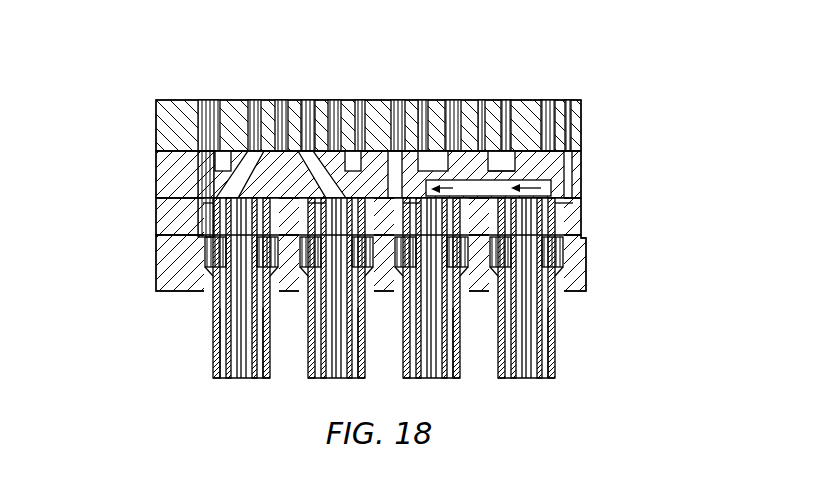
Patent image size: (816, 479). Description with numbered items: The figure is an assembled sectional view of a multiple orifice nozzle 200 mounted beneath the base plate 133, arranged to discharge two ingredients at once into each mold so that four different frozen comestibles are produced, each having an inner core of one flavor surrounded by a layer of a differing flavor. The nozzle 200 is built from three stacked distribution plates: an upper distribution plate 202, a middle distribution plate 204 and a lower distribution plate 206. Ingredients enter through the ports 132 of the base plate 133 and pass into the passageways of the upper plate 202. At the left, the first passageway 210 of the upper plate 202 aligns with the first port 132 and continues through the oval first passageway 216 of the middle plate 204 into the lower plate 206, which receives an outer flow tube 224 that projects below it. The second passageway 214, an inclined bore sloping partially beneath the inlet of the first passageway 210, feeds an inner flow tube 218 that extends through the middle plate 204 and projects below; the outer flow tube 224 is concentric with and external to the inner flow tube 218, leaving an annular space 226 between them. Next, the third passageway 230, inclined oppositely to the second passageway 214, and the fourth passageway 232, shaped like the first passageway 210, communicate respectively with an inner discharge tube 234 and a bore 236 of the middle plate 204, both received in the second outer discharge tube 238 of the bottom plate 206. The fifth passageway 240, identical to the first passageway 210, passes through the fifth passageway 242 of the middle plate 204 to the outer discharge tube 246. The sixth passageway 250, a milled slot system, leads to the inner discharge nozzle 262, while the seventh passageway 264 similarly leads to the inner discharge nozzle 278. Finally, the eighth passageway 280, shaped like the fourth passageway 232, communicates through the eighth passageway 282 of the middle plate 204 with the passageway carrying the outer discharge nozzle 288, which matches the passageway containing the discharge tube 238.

The multiple orifice nozzle 200 is at (125, 256).
The base plate 133 is at (157, 117).
The upper distribution plate 202 is at (155, 155).
The middle distribution plate 204 is at (152, 218).
The lower distribution plate 206 is at (157, 270).
The first passageway 210 is at (197, 174).
The first passageway of the middle plate 216 is at (201, 201).
The outer flow tube 224 is at (207, 338).
The inner flow tube 218 is at (220, 368).
The annular space 226 is at (253, 368).
The inner discharge tube 234 is at (317, 368).
The second outer discharge tube 238 is at (353, 368).
The inner discharge nozzle 278 is at (443, 370).
The outer discharge tube 246 is at (447, 368).
The inner discharge nozzle 262 is at (535, 370).
The outer discharge nozzle 288 is at (548, 347).
The port 132 is at (237, 102).
The second passageway 214 is at (258, 157).
The third passageway 230 is at (297, 153).
The fourth passageway 232 is at (359, 160).
The fifth passageway 240 is at (385, 163).
The sixth passageway 250 is at (450, 152).
The seventh passageway 264 is at (513, 165).
The eighth passageway 280 is at (551, 160).
The bore 236 is at (354, 210).
The fifth passageway of the middle plate 242 is at (393, 210).
The eighth passageway of the middle plate 282 is at (559, 209).